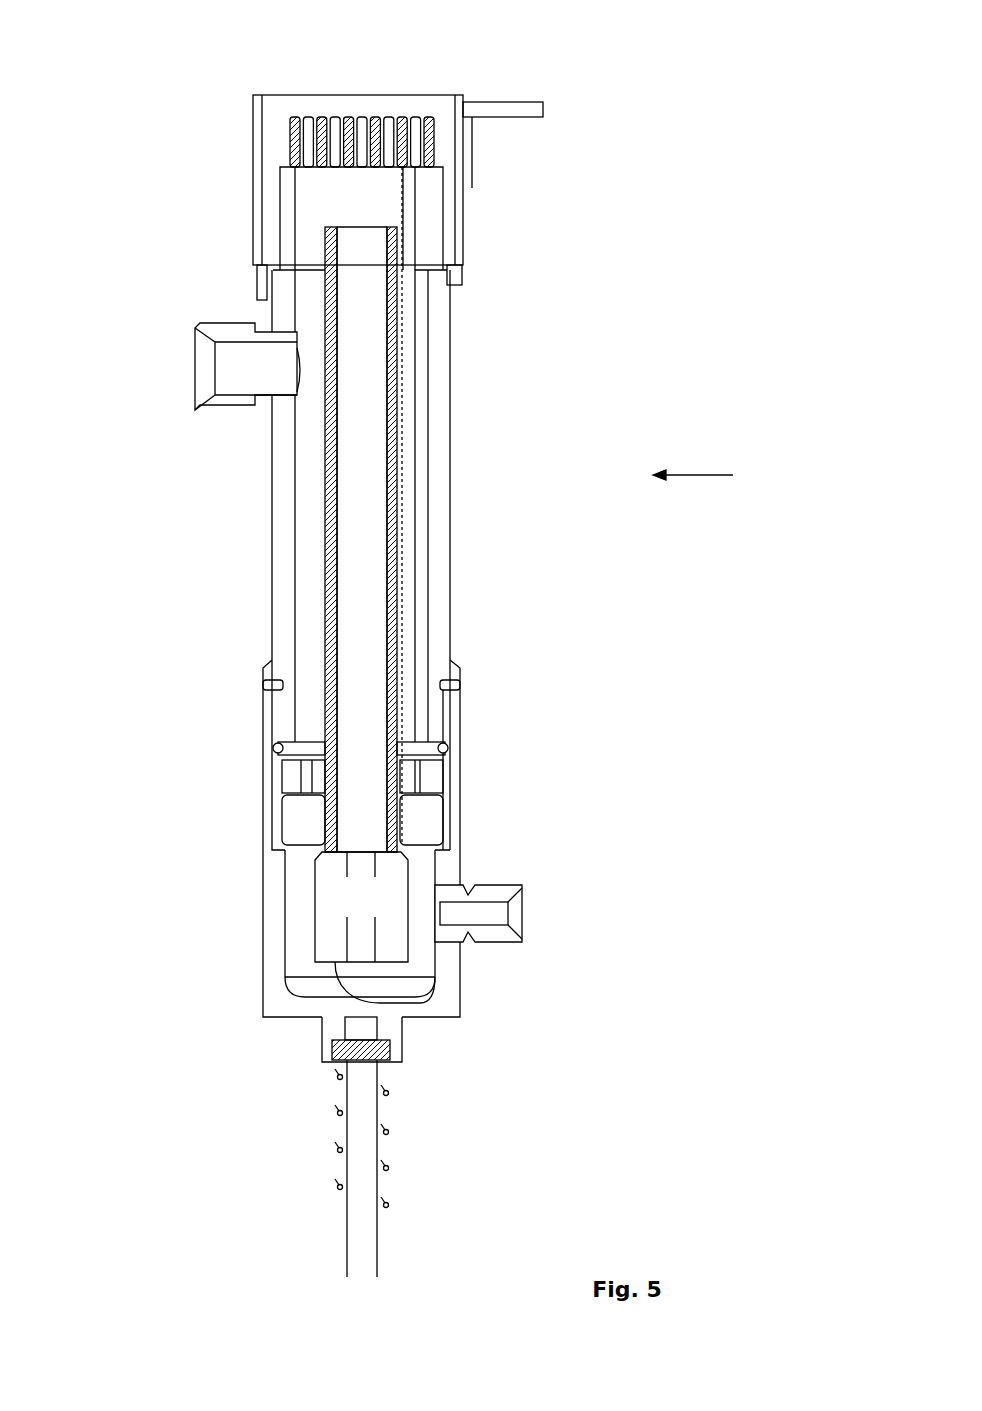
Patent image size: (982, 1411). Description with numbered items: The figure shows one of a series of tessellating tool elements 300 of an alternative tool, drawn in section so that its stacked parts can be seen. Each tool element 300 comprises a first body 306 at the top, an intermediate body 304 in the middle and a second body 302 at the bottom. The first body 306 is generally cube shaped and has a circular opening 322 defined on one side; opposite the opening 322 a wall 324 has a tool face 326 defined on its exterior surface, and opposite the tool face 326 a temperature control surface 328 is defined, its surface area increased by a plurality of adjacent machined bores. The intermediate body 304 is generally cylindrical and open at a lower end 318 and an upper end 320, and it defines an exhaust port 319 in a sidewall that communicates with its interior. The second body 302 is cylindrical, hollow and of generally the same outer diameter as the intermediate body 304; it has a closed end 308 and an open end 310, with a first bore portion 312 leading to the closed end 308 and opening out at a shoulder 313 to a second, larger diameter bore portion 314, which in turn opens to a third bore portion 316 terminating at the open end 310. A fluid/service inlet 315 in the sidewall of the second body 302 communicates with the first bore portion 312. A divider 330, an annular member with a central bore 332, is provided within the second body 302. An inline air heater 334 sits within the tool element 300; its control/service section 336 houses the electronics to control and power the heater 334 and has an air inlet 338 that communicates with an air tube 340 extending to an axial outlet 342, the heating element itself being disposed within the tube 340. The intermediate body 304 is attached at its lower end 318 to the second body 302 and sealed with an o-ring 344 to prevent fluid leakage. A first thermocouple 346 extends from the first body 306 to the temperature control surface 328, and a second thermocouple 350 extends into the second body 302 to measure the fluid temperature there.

The tool element 300 is at (716, 475).
The second body 302 is at (273, 900).
The intermediate body 304 is at (272, 548).
The first body 306 is at (272, 180).
The closed end 308 is at (273, 1010).
The open end 310 is at (272, 705).
The first bore portion 312 is at (287, 945).
The shoulder 313 is at (277, 843).
The second bore portion 314 is at (277, 797).
The fluid/service inlet 315 is at (515, 915).
The third bore portion 316 is at (445, 702).
The lower end 318 is at (438, 720).
The exhaust port 319 is at (247, 366).
The upper end 320 is at (437, 287).
The circular opening 322 is at (322, 272).
The wall 324 is at (300, 107).
The tool face 326 is at (420, 93).
The temperature control surface 328 is at (410, 138).
The divider 330 is at (420, 817).
The central bore 332 is at (400, 810).
The inline air heater 334 is at (457, 963).
The control/service section 336 is at (361, 907).
The air inlet 338 is at (443, 1015).
The air tube 340 is at (365, 465).
The axial outlet 342 is at (361, 539).
The o-ring 344 is at (448, 748).
The first thermocouple 346 is at (413, 365).
The second thermocouple 350 is at (362, 1125).